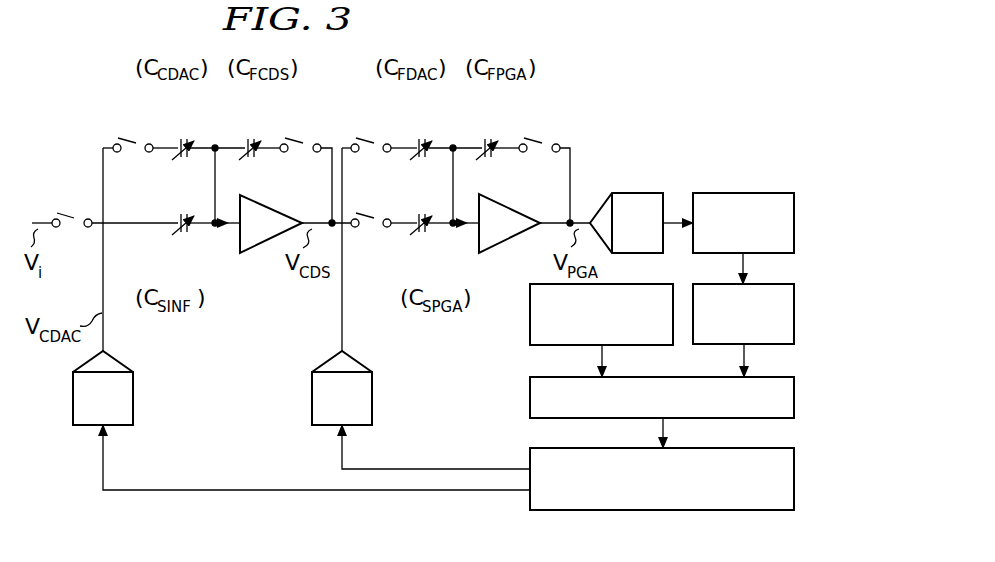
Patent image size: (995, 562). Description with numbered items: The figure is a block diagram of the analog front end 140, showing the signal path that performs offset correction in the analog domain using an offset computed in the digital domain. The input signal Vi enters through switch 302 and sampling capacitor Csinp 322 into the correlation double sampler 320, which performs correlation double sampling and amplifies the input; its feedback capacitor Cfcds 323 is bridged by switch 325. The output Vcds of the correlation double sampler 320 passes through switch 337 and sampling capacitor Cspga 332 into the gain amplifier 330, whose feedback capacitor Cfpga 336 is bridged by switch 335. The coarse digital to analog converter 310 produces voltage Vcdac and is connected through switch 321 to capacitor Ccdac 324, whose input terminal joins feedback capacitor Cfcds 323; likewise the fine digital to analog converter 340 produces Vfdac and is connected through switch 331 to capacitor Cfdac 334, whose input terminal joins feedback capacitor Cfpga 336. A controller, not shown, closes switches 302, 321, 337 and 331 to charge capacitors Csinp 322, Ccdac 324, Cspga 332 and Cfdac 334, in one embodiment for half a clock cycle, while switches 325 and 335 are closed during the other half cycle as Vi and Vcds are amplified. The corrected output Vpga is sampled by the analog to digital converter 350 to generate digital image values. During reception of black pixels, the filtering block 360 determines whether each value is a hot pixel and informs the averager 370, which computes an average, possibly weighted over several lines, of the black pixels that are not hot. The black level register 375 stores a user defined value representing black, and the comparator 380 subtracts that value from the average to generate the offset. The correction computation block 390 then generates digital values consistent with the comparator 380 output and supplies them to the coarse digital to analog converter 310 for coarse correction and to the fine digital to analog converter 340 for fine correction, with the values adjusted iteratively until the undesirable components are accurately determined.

The analog front end (AFE) 140 is at (157, 499).
The switch 302 is at (71, 213).
The coarse digital to analog converter (CDAC) 310 is at (134, 404).
The correlation double sampler (CDS) 320 is at (271, 207).
The switch 321 is at (131, 137).
The sampling capacitor Csinp 322 is at (182, 235).
The feedback capacitor Cfcds 323 is at (249, 137).
The capacitor Ccdac 324 is at (180, 137).
The switch 325 is at (294, 140).
The gain amplifier 330 is at (508, 208).
The switch 331 is at (370, 137).
The sampling capacitor Cspga 332 is at (428, 235).
The capacitor Cfdac 334 is at (420, 137).
The switch 335 is at (534, 139).
The feedback capacitor Cfpga 336 is at (488, 137).
The switch 337 is at (380, 229).
The fine digital to analog converter (FDAC) 340 is at (312, 405).
The analog to digital converter (ADC) 350 is at (639, 193).
The filtering block 360 is at (754, 193).
The averager 370 is at (794, 313).
The black level register 375 is at (530, 325).
The comparator 380 is at (794, 397).
The correction computation block 390 is at (794, 478).